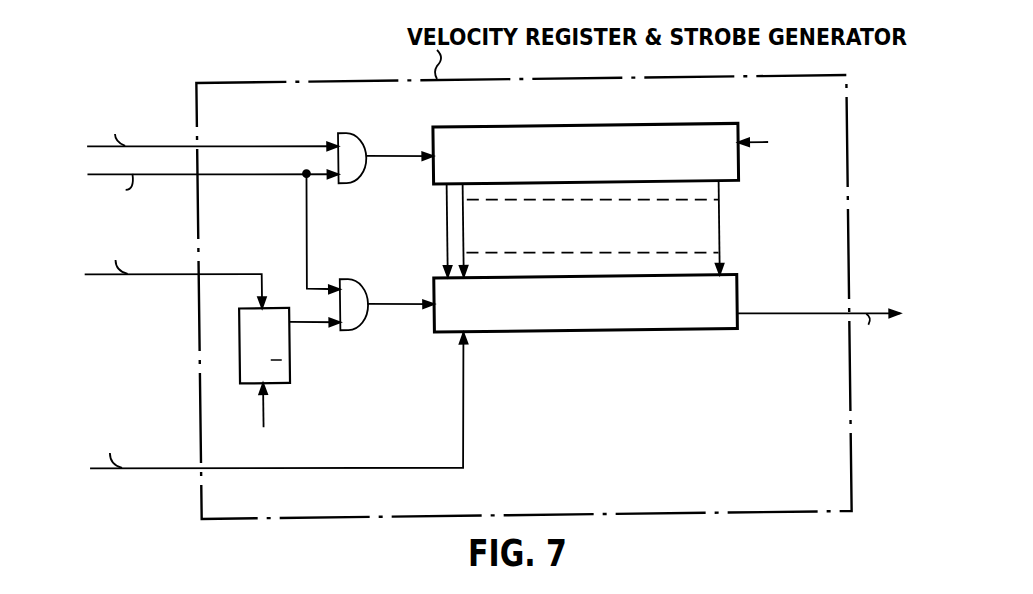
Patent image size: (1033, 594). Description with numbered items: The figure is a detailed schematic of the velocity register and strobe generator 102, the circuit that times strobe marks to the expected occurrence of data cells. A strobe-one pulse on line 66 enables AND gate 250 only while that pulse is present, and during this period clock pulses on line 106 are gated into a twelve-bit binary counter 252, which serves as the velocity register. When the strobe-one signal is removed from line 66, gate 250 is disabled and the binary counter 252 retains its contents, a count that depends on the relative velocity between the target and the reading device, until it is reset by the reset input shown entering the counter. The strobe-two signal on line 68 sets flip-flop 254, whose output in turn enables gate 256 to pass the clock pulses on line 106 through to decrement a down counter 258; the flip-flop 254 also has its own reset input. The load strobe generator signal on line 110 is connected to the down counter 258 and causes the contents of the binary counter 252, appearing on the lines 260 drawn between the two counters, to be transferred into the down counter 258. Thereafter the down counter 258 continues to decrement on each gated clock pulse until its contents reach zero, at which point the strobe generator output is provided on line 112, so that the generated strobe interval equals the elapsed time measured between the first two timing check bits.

The strobe-1 line 66 is at (165, 142).
The clock input line 106 is at (189, 170).
The strobe-2 line 68 is at (173, 270).
The load strobe generator line 110 is at (173, 464).
The AND gate 250 is at (360, 141).
The gate 256 is at (360, 290).
The 12-bit binary counter 252 is at (612, 124).
The flip-flop 254 is at (240, 370).
The down counter 258 is at (697, 332).
The lines 260 is at (679, 200).
The velocity register and strobe generator 102 is at (851, 221).
The output line 112 is at (860, 317).